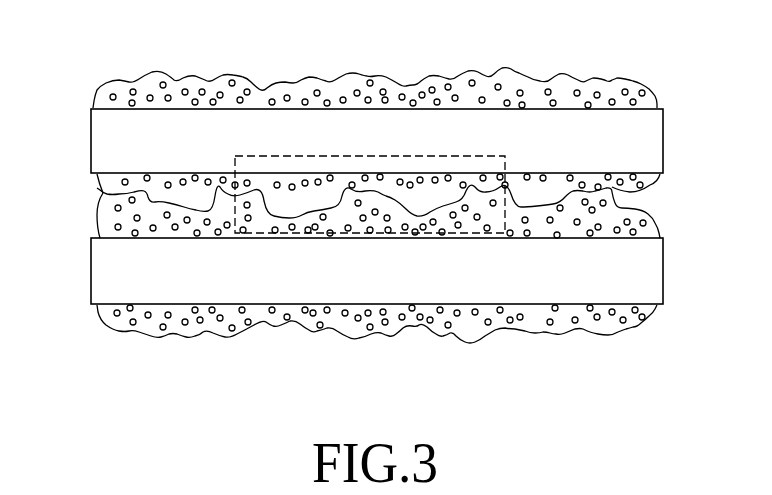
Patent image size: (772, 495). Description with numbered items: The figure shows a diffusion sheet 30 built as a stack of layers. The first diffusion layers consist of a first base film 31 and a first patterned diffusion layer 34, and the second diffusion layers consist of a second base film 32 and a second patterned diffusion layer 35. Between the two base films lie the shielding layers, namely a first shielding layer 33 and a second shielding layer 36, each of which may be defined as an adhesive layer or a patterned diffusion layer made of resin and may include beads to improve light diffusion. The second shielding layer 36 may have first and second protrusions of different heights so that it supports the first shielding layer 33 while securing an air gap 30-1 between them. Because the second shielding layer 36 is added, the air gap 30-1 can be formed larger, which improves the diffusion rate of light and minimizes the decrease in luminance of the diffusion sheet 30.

The diffusion sheet 30 is at (386, 38).
The air gap 30-1 is at (250, 155).
The first base film 31 is at (663, 138).
The second base film 32 is at (663, 280).
The first shielding layer 33 is at (657, 185).
The first patterned diffusion layer 34 is at (657, 93).
The second patterned diffusion layer 35 is at (655, 322).
The second shielding layer 36 is at (660, 227).